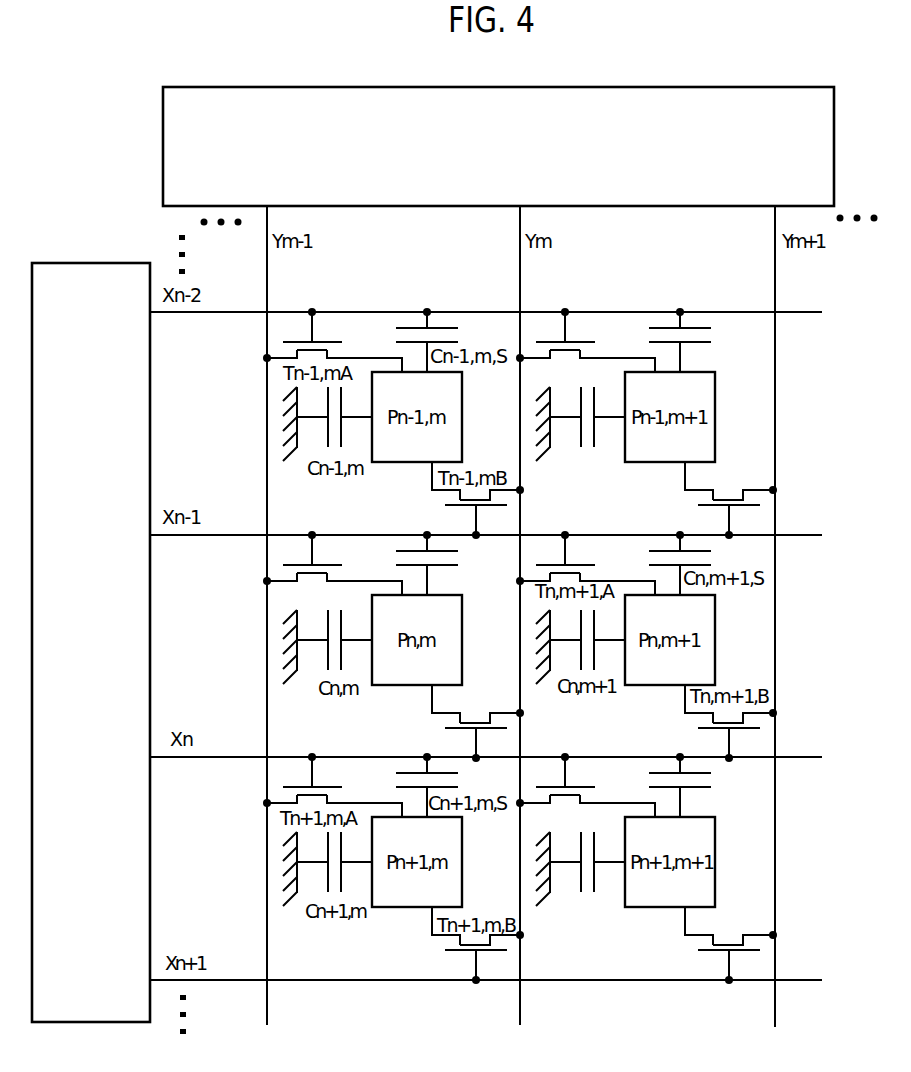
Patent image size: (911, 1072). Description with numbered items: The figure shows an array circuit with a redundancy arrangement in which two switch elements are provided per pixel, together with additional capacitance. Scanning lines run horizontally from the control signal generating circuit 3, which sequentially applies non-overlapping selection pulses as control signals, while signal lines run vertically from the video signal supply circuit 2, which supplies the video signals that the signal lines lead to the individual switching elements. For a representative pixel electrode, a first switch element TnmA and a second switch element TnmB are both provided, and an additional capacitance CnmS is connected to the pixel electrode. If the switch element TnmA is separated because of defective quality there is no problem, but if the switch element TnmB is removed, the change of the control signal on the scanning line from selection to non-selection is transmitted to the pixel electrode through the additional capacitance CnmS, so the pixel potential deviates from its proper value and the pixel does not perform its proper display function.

The video signal supply circuit 2 is at (660, 87).
The control signal generating circuit 3 is at (110, 263).
The switch element TnmA is at (332, 566).
The additional capacitance CnmS is at (446, 563).
The switch element TnmB is at (478, 723).